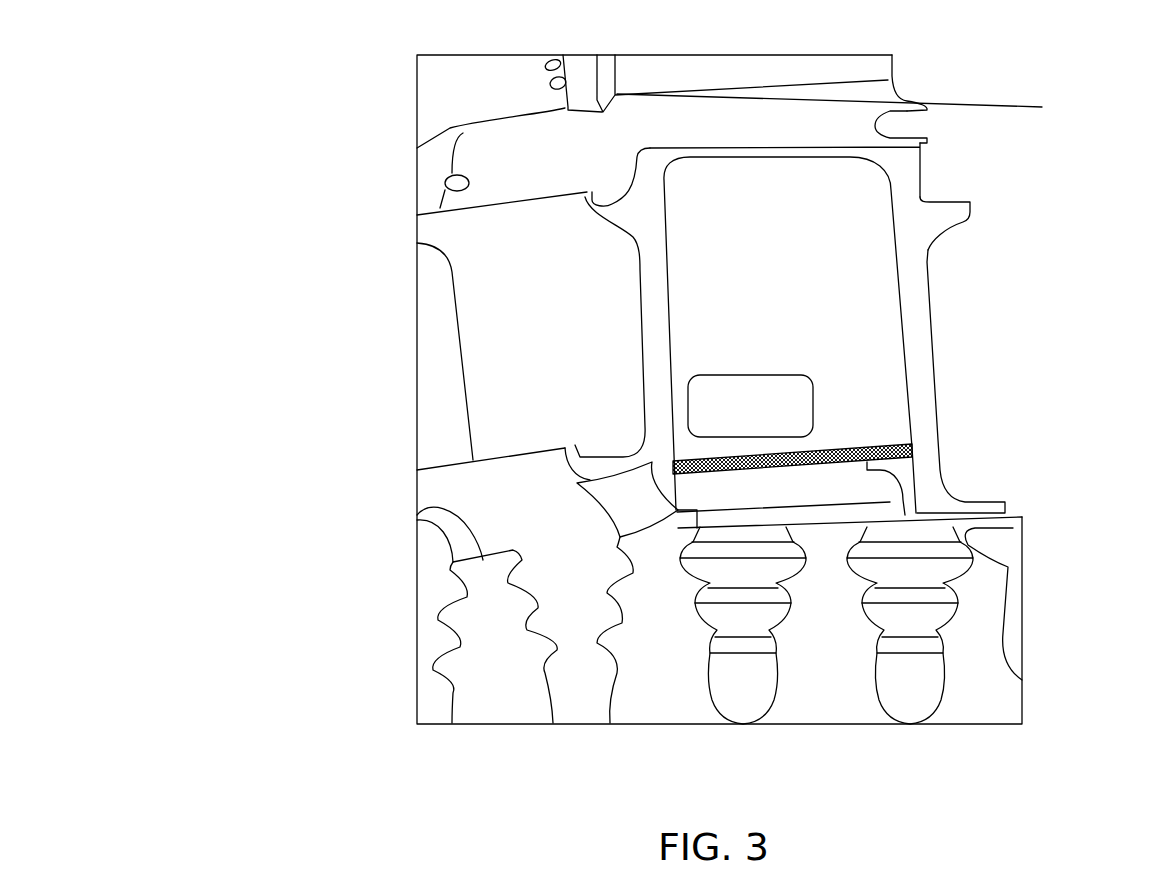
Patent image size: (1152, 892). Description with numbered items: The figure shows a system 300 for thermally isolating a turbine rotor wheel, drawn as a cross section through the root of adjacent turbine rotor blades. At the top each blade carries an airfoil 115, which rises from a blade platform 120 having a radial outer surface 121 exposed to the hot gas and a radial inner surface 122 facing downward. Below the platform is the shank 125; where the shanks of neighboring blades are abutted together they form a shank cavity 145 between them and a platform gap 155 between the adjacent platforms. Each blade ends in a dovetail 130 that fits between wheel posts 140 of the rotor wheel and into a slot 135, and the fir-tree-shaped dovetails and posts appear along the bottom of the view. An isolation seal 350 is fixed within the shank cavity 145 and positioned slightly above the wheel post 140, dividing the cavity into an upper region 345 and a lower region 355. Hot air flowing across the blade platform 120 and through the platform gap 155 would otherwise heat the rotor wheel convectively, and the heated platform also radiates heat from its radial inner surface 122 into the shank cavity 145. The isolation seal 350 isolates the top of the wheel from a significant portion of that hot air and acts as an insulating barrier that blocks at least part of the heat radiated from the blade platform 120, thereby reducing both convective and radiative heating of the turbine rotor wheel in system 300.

The airfoil 115 is at (730, 72).
The blade platform 120 is at (848, 118).
The radial outer surface 121 is at (882, 89).
The radial inner surface 122 is at (858, 156).
The shank 125 is at (960, 212).
The dovetail 130 is at (575, 672).
The slot 135 is at (742, 672).
The wheel post 140 is at (823, 672).
The shank cavity 145 is at (905, 325).
The platform gap 155 is at (452, 277).
The system for thermally isolating a turbine rotor wheel 300 is at (268, 578).
The upper region 345 is at (790, 335).
The isolation seal 350 is at (913, 448).
The lower region 355 is at (791, 495).